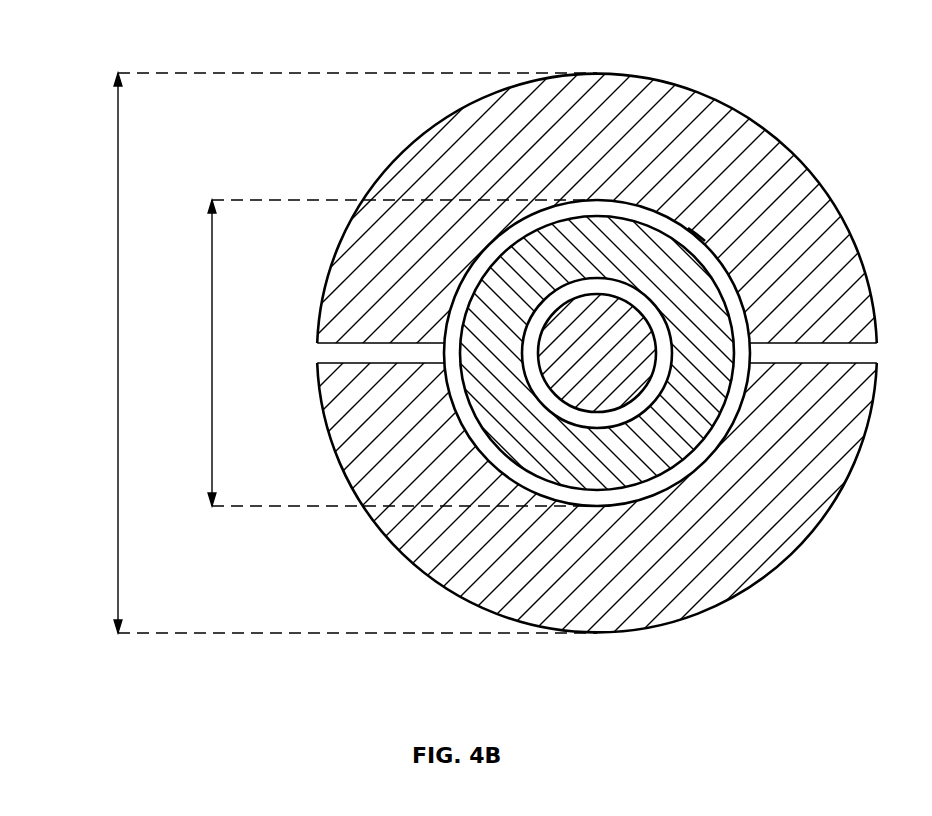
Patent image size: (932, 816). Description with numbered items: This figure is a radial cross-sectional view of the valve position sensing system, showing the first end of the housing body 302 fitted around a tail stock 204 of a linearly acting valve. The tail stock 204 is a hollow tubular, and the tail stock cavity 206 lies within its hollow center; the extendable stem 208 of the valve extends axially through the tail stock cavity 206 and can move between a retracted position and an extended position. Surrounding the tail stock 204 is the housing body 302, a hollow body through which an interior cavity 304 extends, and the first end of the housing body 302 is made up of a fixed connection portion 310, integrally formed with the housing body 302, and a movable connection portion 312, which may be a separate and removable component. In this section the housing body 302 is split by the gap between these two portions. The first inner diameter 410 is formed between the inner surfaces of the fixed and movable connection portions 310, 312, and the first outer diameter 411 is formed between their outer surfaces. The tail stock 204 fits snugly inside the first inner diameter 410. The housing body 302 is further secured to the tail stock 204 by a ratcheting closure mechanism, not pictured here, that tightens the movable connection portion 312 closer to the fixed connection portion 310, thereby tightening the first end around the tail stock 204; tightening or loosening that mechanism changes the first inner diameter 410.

The tail stock 204 is at (717, 260).
The tail stock cavity 206 is at (673, 353).
The extendable stem 208 is at (717, 273).
The housing body 302 is at (742, 110).
The interior cavity 304 is at (688, 228).
The fixed connection portion 310 is at (633, 92).
The movable connection portion 312 is at (595, 612).
The first inner diameter 410 is at (212, 378).
The first outer diameter 411 is at (118, 407).